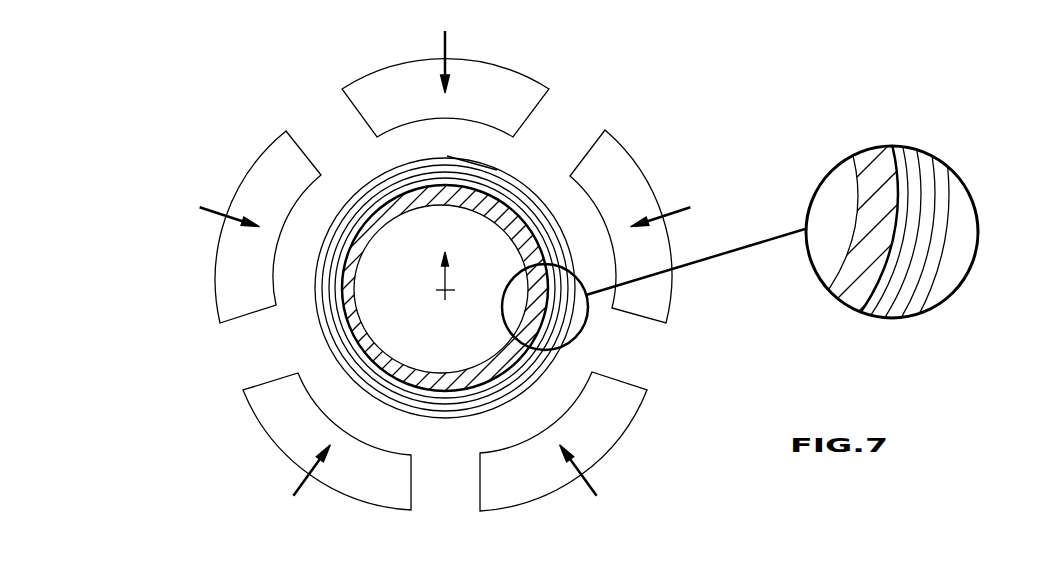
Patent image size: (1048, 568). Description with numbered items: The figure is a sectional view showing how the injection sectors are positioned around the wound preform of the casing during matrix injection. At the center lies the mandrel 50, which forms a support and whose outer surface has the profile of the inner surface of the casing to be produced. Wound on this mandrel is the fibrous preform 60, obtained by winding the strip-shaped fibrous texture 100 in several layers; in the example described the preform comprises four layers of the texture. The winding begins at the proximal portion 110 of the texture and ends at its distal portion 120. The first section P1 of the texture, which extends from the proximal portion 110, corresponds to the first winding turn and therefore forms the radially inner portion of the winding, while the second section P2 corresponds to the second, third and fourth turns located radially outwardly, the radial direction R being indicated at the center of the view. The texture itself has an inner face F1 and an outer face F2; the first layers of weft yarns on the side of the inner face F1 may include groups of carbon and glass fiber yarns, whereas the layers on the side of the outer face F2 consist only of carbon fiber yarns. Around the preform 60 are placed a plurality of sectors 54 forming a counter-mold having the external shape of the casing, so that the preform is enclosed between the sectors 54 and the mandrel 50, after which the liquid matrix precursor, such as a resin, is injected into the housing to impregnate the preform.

The sectors 54 is at (517, 82).
The fibrous preform 60 is at (529, 171).
The fibrous texture 100 is at (376, 170).
The distal portion 120 is at (478, 167).
The proximal portion 110 is at (456, 185).
The mandrel 50 is at (452, 378).
The first section P1 is at (471, 192).
The second section P2 is at (510, 180).
The radial direction R is at (443, 277).
The inner face F1 is at (887, 212).
The outer face F2 is at (958, 241).